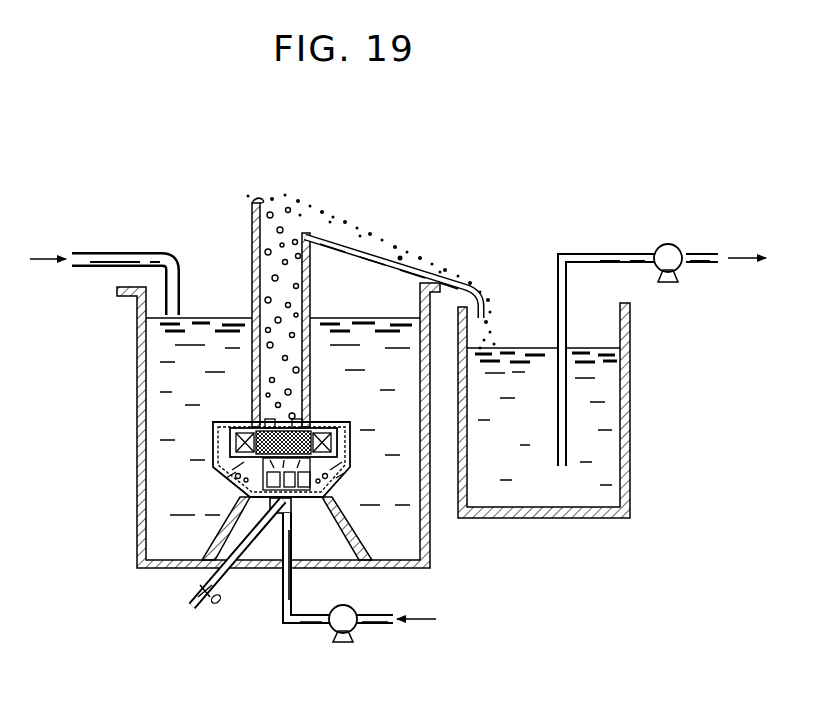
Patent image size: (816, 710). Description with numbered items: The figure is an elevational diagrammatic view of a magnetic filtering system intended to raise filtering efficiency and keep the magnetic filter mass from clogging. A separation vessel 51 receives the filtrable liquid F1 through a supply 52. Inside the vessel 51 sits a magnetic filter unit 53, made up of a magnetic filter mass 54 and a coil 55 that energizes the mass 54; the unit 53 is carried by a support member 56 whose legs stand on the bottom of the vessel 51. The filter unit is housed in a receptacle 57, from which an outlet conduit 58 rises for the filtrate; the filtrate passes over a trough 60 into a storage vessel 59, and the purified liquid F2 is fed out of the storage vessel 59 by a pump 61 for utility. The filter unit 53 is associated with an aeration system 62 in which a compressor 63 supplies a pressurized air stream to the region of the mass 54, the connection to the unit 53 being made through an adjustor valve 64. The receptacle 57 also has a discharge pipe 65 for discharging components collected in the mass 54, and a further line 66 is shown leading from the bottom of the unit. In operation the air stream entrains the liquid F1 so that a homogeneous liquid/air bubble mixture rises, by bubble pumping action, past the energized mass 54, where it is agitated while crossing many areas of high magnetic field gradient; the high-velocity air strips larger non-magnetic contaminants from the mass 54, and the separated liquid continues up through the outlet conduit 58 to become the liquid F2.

The separation vessel 51 is at (137, 470).
The supply 52 is at (129, 252).
The magnetic filter unit 53 is at (348, 458).
The magnetic filter mass 54 is at (309, 426).
The coil 55 is at (346, 430).
The support member 56 is at (350, 562).
The receptacle 57 is at (215, 421).
The outlet conduit 58 is at (252, 240).
The storage vessel 59 is at (630, 404).
The trough 60 is at (362, 257).
The pump 61 is at (668, 244).
The aeration system 62 is at (335, 601).
The compressor 63 is at (350, 642).
The adjustor valve 64 is at (296, 513).
The discharge pipe 65 is at (300, 628).
The drain pipe 66 is at (262, 560).
The filtrable liquid F1 is at (146, 383).
The purified liquid F2 is at (388, 249).